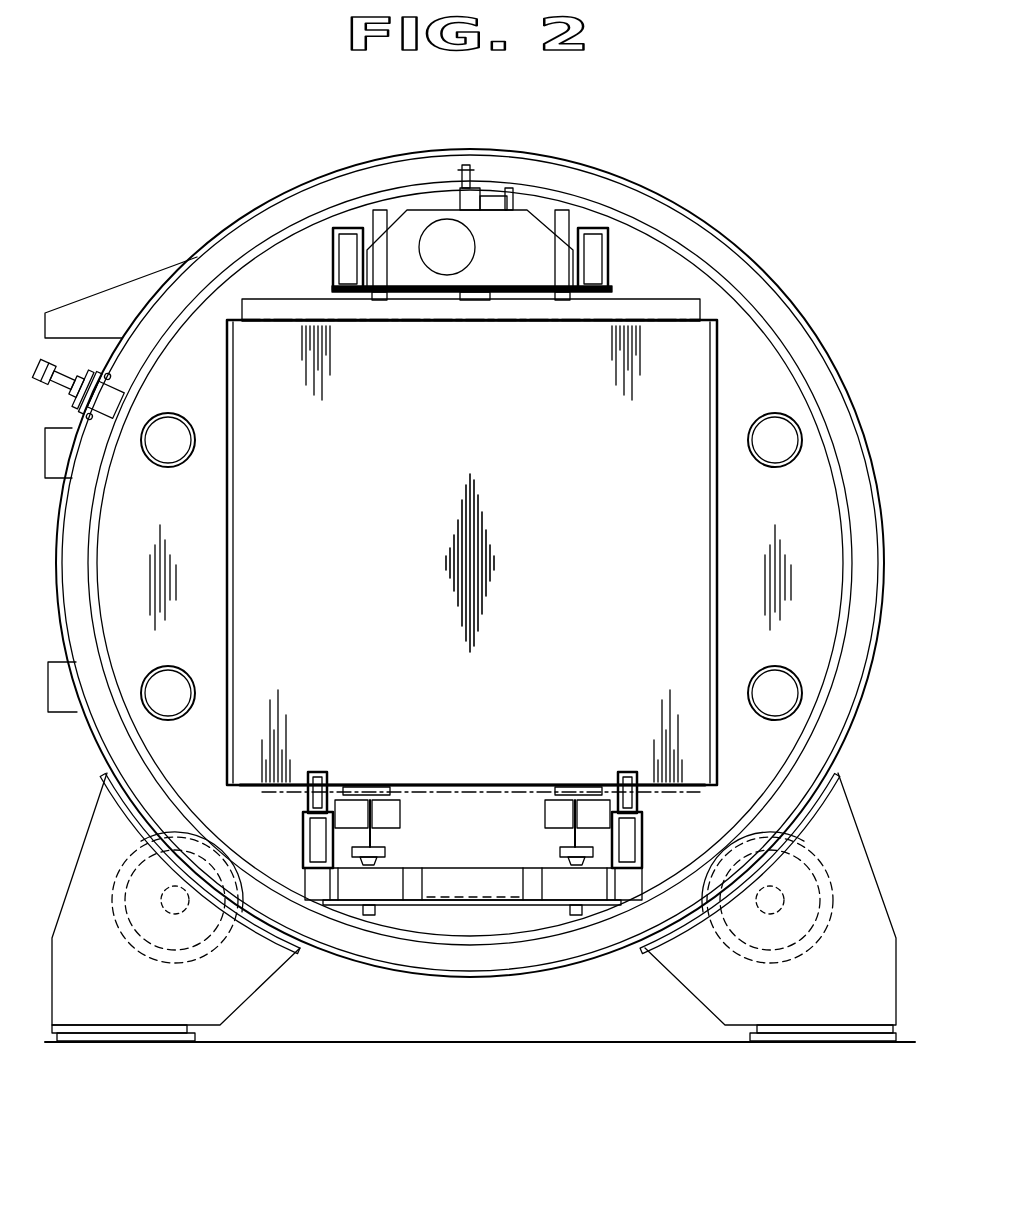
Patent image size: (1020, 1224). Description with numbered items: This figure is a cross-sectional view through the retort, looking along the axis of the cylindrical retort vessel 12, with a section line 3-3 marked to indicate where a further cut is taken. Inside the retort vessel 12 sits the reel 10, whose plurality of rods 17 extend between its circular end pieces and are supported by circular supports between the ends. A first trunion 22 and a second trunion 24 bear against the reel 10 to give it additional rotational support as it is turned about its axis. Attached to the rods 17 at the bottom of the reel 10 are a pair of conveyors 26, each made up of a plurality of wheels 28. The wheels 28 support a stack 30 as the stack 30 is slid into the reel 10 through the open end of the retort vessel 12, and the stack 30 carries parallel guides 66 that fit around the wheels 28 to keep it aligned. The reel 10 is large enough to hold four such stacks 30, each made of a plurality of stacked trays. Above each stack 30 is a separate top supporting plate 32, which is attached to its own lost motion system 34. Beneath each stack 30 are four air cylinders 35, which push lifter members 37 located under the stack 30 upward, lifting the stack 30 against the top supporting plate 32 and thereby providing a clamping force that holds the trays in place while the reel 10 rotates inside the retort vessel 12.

The section line 3- 3 is at (242, 208).
The reel 10 is at (222, 264).
The retort vessel 12 is at (353, 166).
The rods 17 is at (168, 667).
The first trunion 22 is at (218, 869).
The second trunion 24 is at (726, 869).
The conveyors 26 is at (310, 812).
The wheels 28 is at (318, 772).
The stack 30 is at (490, 452).
The top supporting plate 32 is at (638, 307).
The lost motion system 34 is at (484, 186).
The air cylinders 35 is at (555, 882).
The lifter members 37 is at (548, 806).
The parallel guides 66 is at (625, 778).